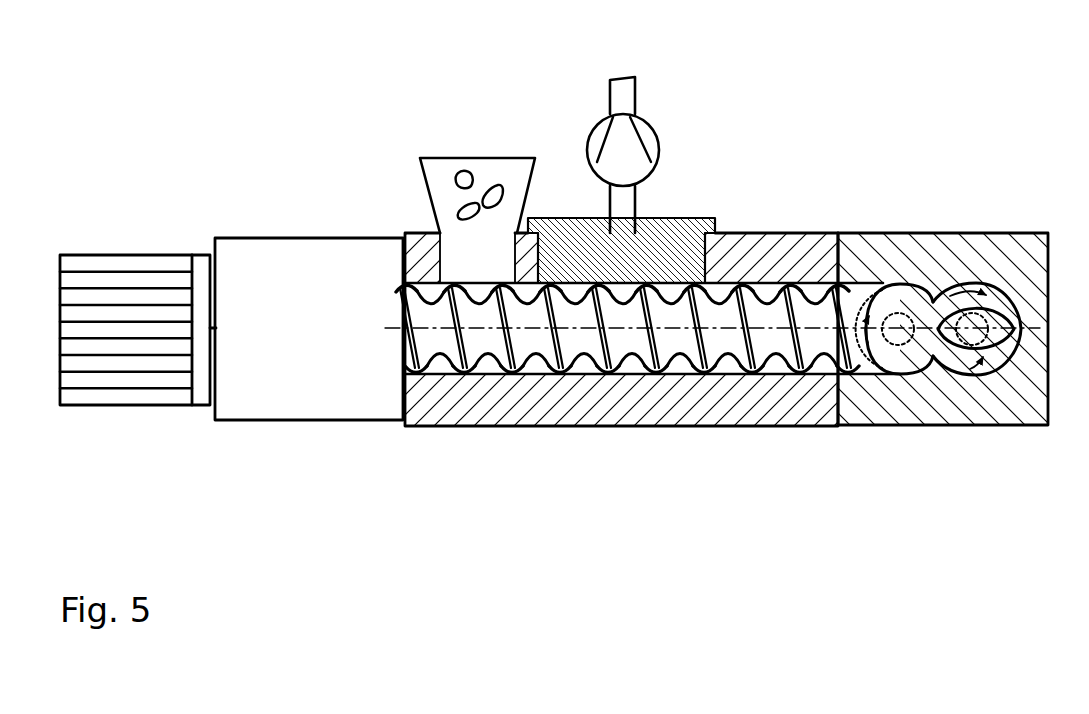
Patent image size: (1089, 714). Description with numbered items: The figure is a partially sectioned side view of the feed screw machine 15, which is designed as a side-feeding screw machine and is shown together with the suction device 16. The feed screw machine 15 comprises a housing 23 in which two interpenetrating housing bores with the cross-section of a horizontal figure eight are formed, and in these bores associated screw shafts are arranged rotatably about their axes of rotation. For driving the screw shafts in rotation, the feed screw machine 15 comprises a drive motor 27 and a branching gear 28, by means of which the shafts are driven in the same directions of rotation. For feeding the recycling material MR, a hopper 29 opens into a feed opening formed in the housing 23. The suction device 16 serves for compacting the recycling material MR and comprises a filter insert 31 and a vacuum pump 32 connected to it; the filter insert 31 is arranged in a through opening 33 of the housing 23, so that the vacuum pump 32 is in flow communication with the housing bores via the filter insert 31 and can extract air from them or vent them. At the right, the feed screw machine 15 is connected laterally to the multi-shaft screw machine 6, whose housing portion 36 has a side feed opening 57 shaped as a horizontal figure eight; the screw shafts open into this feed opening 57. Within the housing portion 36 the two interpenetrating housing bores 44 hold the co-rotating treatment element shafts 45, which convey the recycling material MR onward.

The feed screw machine 15 is at (319, 112).
The drive motor 27 is at (128, 378).
The branching gear 28 is at (317, 405).
The housing 23 is at (560, 413).
The filter insert 31 is at (690, 228).
The hopper 29 is at (442, 197).
The recycling material MR is at (465, 176).
The suction device 16 is at (656, 146).
The vacuum pump 32 is at (645, 132).
The through opening 33 is at (705, 408).
The housing portion 36 is at (933, 242).
The multi-shaft screw machine 6 is at (945, 336).
The feed opening 57 is at (855, 367).
The housing bore 44 is at (993, 292).
The treatment element shaft 45 is at (983, 363).